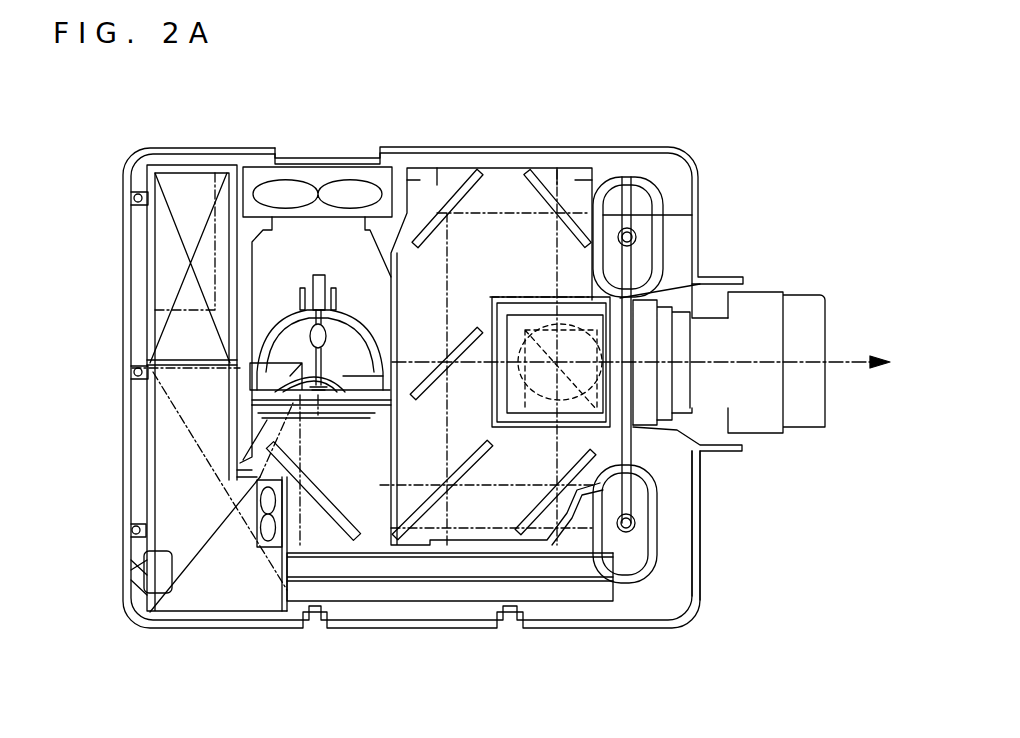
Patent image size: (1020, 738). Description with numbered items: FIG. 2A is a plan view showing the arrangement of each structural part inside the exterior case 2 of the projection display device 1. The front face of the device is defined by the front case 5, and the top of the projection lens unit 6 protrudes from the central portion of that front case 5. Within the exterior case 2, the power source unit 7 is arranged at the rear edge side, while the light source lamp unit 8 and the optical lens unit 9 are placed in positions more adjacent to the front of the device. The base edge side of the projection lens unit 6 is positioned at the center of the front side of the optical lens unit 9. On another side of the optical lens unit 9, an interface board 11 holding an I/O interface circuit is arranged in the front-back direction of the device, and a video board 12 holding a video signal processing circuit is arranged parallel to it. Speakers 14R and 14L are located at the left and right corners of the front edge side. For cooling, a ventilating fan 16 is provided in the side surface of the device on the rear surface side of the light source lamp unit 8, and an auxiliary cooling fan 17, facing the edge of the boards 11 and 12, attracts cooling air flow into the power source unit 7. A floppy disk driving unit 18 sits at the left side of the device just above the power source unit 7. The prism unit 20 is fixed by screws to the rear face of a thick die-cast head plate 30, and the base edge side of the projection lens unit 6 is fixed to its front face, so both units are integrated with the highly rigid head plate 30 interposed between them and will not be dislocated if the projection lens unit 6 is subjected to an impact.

The projection display device 1 is at (653, 113).
The exterior case 2 is at (122, 298).
The front case 5 is at (698, 533).
The projection lens unit 6 is at (771, 288).
The power source unit 7 is at (189, 483).
The light source lamp unit 8 is at (382, 320).
The optical lens unit 9 is at (502, 160).
The interface board 11 is at (580, 600).
The video board 12 is at (467, 557).
The speaker 14R is at (664, 208).
The speaker 14L is at (668, 566).
The ventilating fan 16 is at (263, 172).
The auxiliary cooling fan 17 is at (268, 548).
The floppy disk driving unit 18 is at (175, 431).
The prism unit 20 is at (543, 412).
The head plate 30 is at (624, 438).